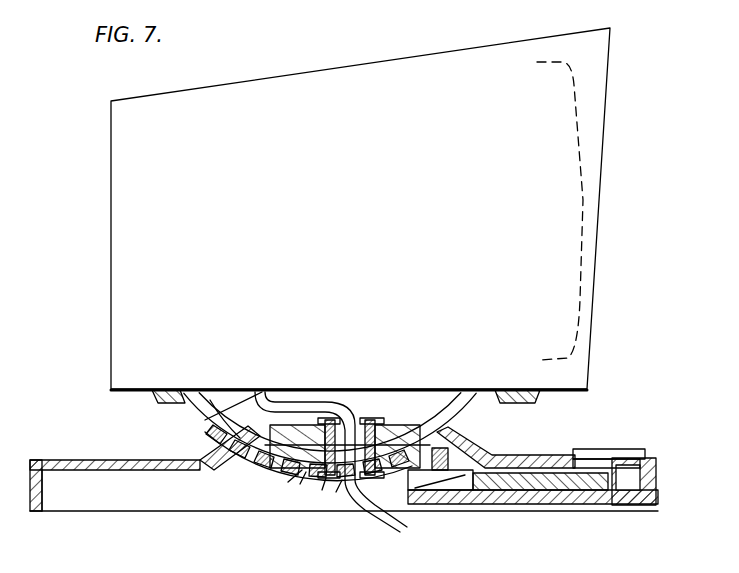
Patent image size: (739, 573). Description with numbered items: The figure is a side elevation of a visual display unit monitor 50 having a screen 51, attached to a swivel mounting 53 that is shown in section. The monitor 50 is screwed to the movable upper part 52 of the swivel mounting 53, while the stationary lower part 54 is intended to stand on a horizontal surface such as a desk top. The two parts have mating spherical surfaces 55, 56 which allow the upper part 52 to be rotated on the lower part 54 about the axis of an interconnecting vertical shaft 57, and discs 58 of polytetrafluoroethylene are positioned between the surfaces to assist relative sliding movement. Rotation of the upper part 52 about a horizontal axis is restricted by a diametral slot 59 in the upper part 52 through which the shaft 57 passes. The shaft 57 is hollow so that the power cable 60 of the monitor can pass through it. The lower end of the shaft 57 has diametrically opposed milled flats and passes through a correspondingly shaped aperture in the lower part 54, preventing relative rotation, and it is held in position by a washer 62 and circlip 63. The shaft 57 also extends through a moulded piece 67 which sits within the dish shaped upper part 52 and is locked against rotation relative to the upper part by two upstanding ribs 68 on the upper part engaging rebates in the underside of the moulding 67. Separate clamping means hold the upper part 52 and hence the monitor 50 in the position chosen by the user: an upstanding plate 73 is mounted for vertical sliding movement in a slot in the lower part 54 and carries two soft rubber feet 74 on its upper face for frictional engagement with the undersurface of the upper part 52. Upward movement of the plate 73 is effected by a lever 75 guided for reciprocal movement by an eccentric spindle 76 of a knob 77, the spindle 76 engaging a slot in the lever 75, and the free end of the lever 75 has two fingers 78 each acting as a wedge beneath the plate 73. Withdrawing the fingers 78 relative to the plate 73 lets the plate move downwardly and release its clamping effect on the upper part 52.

The visual display unit monitor 50 is at (322, 72).
The screen 51 is at (580, 97).
The movable upper part 52 is at (205, 410).
The swivel mounting 53 is at (118, 419).
The stationary lower part 54 is at (58, 462).
The spherical surface 55 is at (213, 427).
The spherical surface 56 is at (290, 472).
The vertical shaft 57 is at (340, 497).
The discs 58 is at (232, 458).
The diametral slot 59 is at (290, 485).
The power cable 60 is at (402, 523).
The washer 62 is at (298, 488).
The circlip 63 is at (322, 492).
The moulded piece 67 is at (389, 425).
The upstanding ribs 68 is at (218, 398).
The upstanding plate 73 is at (498, 450).
The soft rubber feet 74 is at (441, 448).
The lever 75 is at (555, 495).
The eccentric spindle 76 is at (656, 470).
The knob 77 is at (617, 450).
The fingers 78 is at (458, 494).